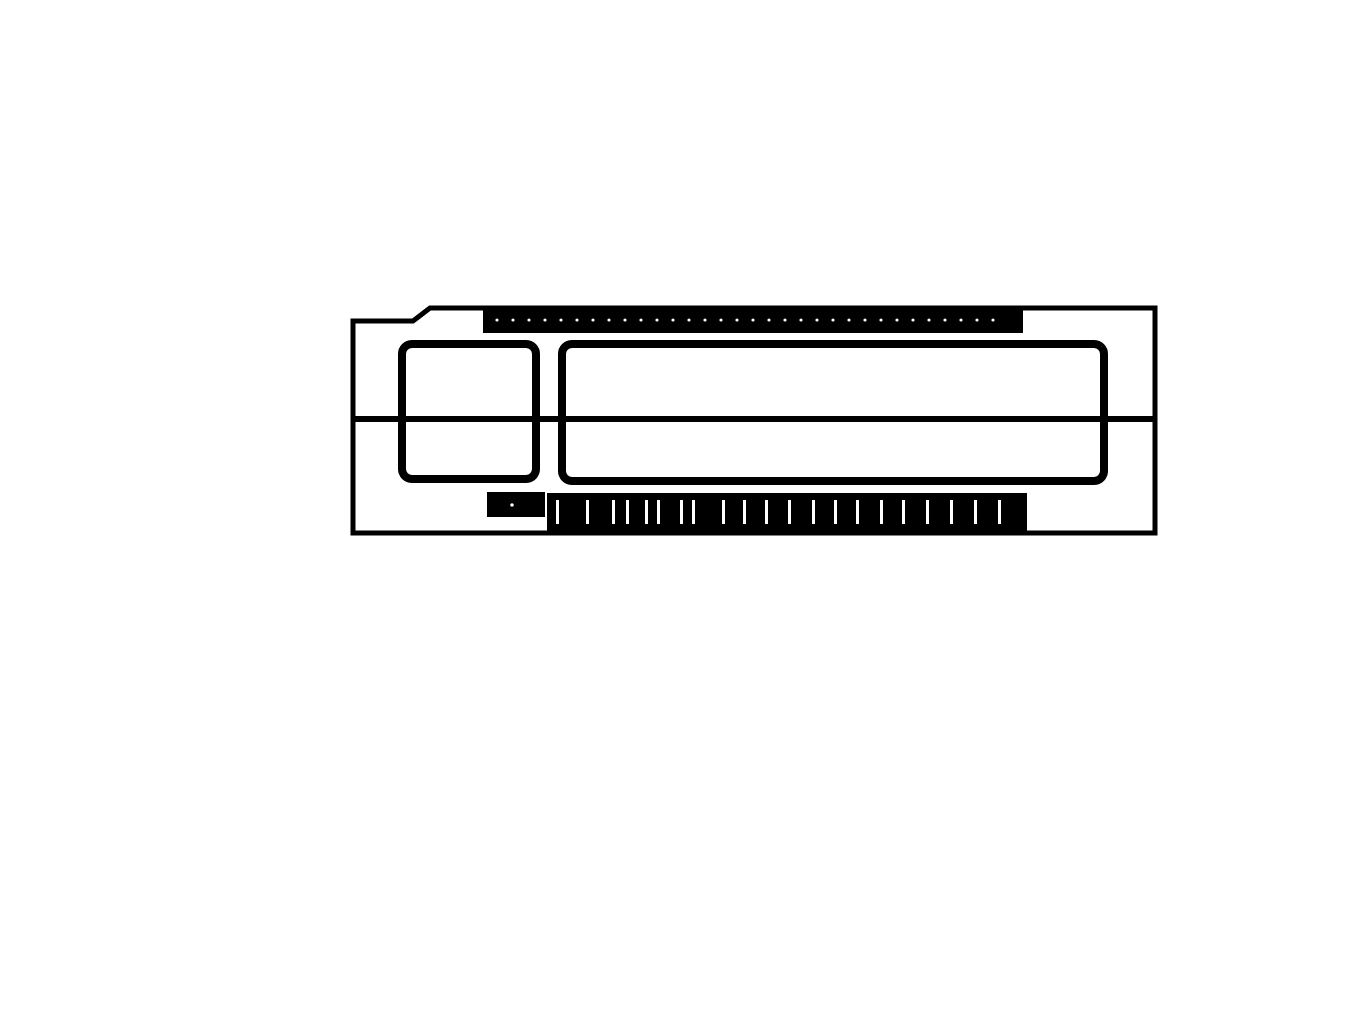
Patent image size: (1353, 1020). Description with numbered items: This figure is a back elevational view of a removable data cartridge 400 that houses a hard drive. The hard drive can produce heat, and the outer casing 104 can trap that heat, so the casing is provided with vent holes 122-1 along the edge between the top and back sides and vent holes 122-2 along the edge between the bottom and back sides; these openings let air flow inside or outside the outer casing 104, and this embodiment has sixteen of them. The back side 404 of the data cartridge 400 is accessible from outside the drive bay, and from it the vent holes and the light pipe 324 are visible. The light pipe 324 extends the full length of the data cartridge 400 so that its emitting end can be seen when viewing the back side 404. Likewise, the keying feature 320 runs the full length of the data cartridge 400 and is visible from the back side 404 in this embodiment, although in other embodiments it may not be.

The data cartridge 400 is at (935, 124).
The outer casing 104 is at (1158, 300).
The keying feature 320 is at (393, 318).
The back side 404 is at (1126, 510).
The vent holes 122-1 is at (833, 306).
The vent holes 122-2 is at (851, 537).
The light pipe 324 is at (517, 505).